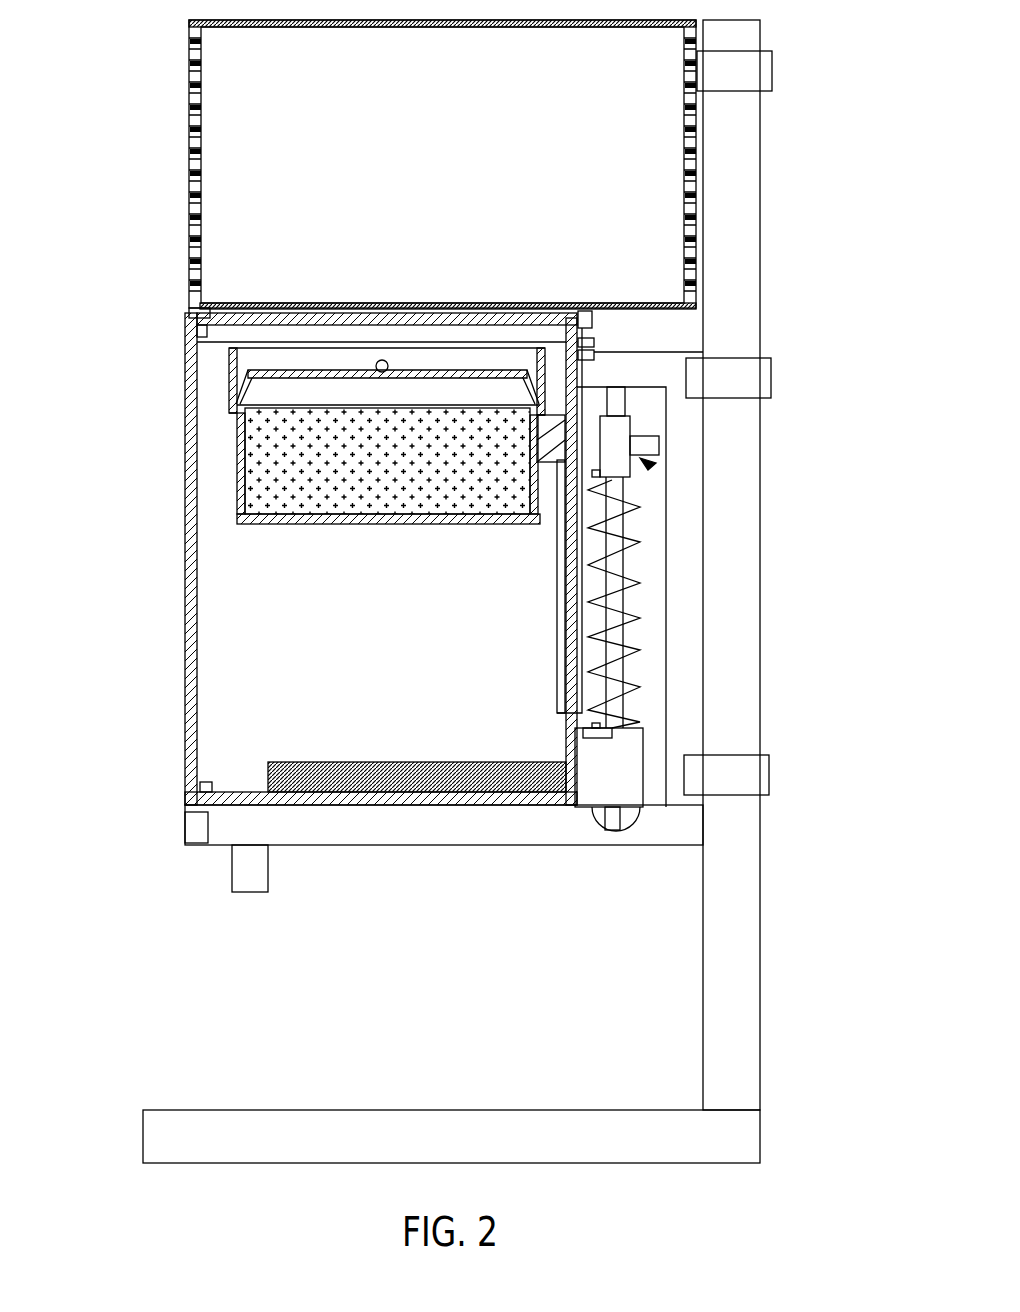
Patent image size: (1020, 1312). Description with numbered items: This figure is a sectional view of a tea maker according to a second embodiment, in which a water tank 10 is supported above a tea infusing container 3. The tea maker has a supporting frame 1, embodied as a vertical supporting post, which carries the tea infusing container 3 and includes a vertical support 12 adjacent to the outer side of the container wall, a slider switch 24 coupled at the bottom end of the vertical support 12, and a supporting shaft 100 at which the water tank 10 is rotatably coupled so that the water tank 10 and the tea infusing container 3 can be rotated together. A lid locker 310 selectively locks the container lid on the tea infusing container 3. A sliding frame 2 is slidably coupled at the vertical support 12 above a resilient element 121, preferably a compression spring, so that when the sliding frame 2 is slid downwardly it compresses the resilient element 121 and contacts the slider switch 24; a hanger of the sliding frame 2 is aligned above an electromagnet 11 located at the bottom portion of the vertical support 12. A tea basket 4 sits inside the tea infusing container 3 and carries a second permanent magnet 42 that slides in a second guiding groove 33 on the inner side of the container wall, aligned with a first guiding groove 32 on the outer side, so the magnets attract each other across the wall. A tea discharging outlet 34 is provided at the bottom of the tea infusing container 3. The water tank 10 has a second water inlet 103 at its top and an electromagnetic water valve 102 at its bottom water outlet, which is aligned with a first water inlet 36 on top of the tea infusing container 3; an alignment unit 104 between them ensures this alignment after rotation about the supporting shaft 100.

The supporting frame 1 is at (271, 1133).
The sliding frame 2 is at (660, 467).
The tea infusing container 3 is at (188, 748).
The tea basket 4 is at (297, 480).
The water tank 10 is at (643, 160).
The electromagnet 11 is at (583, 735).
The vertical support 12 is at (612, 636).
The slider switch 24 is at (595, 738).
The first guiding groove 32 is at (580, 583).
The second guiding groove 33 is at (563, 648).
The tea discharging outlet 34 is at (253, 865).
The first water inlet 36 is at (200, 325).
The second permanent magnet 42 is at (552, 470).
The supporting shaft 100 is at (735, 940).
The electromagnetic water valve 102 is at (200, 315).
The second water inlet 103 is at (603, 27).
The alignment unit 104 is at (594, 322).
The resilient element 121 is at (637, 690).
The lid locker 310 is at (594, 358).